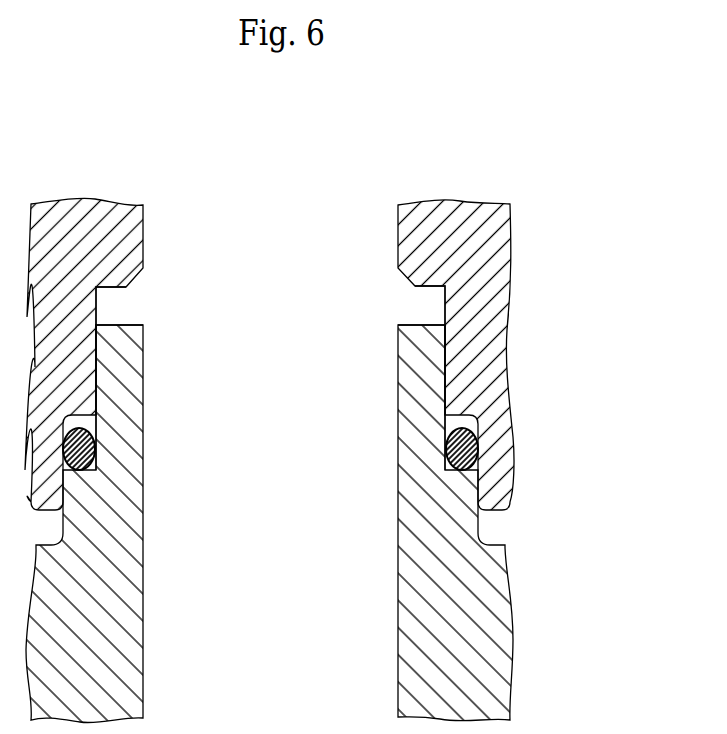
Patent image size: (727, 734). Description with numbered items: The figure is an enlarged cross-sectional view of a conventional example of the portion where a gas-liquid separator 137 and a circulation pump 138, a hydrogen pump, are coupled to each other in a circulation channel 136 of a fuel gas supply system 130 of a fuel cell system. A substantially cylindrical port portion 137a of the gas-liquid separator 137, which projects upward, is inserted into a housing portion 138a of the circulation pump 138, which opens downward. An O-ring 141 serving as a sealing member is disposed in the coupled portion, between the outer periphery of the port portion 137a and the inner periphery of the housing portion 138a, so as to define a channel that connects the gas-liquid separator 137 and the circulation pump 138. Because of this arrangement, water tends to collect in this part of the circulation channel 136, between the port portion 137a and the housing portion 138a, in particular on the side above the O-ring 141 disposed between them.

The fuel gas supply system 130 is at (328, 250).
The circulation channel 136 is at (310, 460).
The gas-liquid separator 137 is at (495, 635).
The port portion 137a is at (422, 462).
The circulation pump 138 is at (497, 253).
The housing portion 138a is at (445, 305).
The O-ring 141 is at (456, 456).